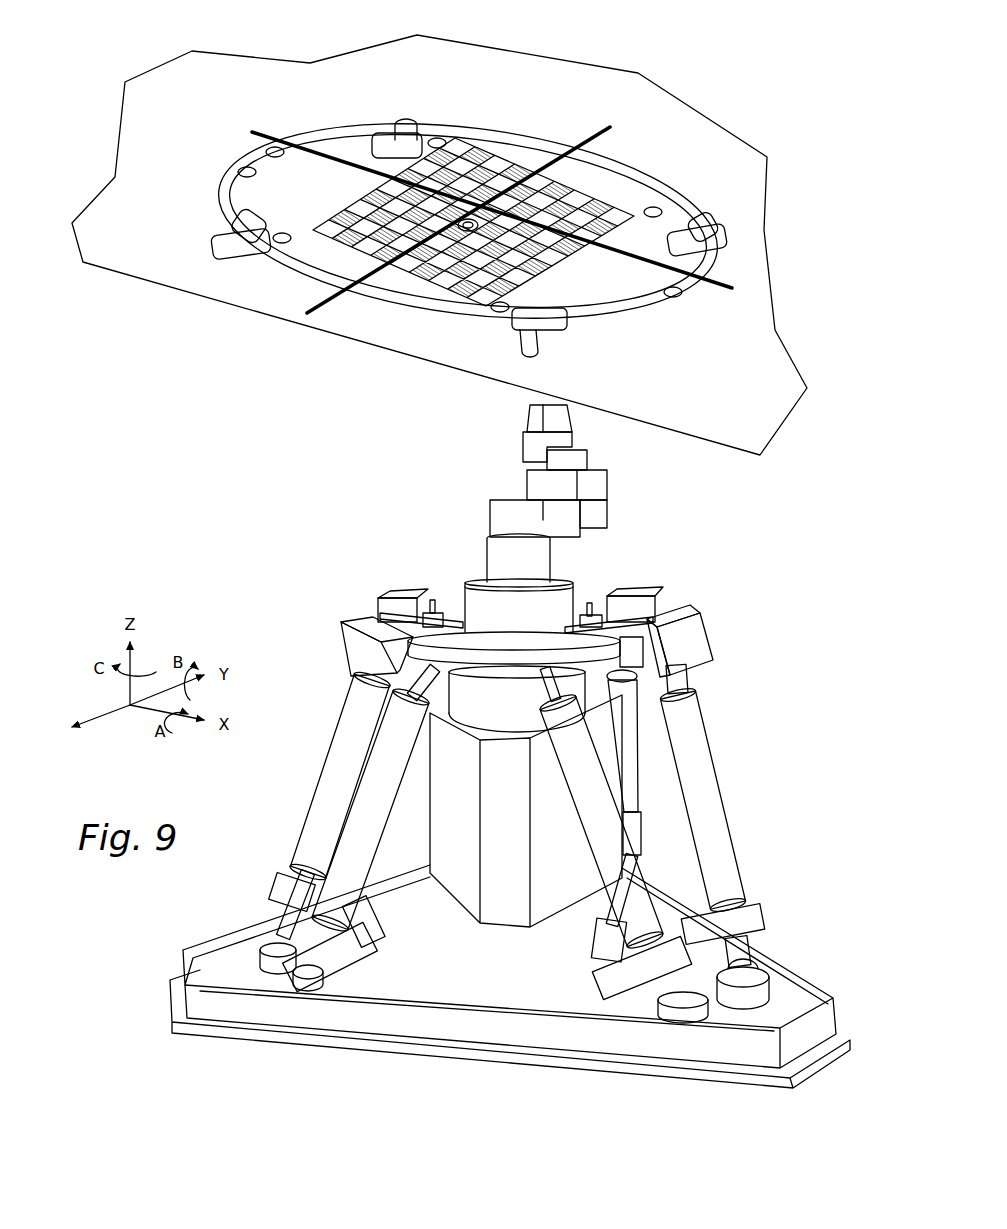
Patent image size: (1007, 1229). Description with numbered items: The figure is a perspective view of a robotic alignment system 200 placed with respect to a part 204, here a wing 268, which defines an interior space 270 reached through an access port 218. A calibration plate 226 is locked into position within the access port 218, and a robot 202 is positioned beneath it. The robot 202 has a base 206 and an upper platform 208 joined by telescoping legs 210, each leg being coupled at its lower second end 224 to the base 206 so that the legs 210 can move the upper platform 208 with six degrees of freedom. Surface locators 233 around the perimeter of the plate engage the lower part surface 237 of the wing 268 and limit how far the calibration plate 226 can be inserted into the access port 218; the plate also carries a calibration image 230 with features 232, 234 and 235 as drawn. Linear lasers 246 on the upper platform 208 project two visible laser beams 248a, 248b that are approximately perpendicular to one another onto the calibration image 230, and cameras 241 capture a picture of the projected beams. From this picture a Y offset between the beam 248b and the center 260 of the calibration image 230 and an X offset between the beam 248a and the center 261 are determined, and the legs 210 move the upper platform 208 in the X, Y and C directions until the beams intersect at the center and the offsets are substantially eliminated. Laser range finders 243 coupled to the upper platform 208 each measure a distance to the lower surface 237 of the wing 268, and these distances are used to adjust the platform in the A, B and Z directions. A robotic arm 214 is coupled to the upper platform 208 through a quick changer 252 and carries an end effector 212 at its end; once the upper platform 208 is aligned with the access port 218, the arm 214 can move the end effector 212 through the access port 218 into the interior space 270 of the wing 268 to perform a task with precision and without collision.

The robotic alignment system 200 is at (170, 40).
The robot 202 is at (297, 596).
The part 204 is at (733, 142).
The base 206 is at (252, 1040).
The upper platform 208 is at (492, 657).
The legs 210 is at (335, 782).
The end effector 212 is at (556, 493).
The robotic arm 214 is at (490, 510).
The access port 218 is at (323, 133).
The second end 224 is at (278, 940).
The calibration plate 226 is at (480, 138).
The calibration image 230 is at (606, 188).
The ring holes 232 is at (437, 138).
The surface locators 233 is at (230, 258).
The panel top surface 234 is at (580, 291).
The clamp members 235 is at (400, 125).
The lower part surface 237 is at (718, 384).
The cameras 241 is at (432, 600).
The laser range finders 243 is at (380, 595).
The linear lasers 246 is at (425, 610).
The visible laser beam 248a is at (251, 137).
The visible laser beam 248b is at (337, 312).
The quick changer 252 is at (452, 597).
The center of calibration image 260 is at (481, 212).
The center of calibration image 261 is at (478, 168).
The wing 268 is at (748, 220).
The interior space 270 is at (126, 199).